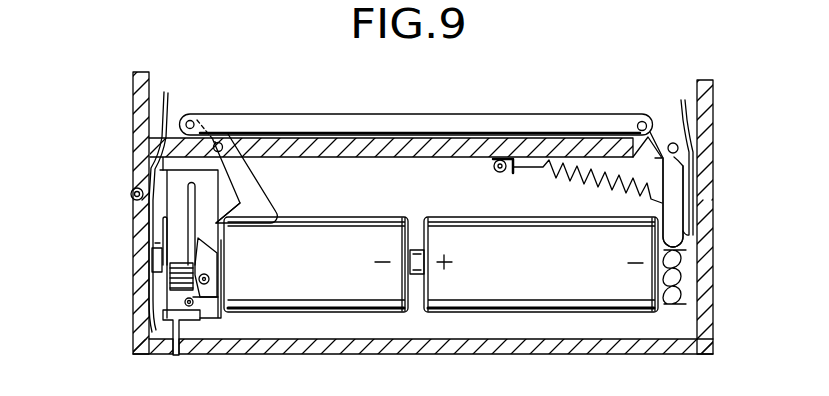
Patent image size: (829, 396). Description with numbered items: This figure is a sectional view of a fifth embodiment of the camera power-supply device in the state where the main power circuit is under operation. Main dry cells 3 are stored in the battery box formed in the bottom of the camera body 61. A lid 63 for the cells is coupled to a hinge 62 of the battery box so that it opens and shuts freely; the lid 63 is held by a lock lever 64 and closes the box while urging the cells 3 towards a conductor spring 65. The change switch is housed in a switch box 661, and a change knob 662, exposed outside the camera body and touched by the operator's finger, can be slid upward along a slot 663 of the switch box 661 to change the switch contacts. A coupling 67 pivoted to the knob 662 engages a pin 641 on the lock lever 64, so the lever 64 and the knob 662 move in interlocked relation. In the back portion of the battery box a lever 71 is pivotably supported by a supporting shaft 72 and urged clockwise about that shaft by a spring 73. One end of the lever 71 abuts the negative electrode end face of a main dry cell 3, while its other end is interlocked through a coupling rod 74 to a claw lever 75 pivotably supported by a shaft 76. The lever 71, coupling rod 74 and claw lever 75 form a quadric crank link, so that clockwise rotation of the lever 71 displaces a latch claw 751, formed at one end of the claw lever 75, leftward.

The camera body 61 is at (140, 104).
The hinge 62 is at (131, 188).
The switch box 661 is at (165, 205).
The slot 663 is at (190, 228).
The lid 63 is at (152, 254).
The change knob 662 is at (180, 294).
The lock lever 64 is at (163, 318).
The pin 641 is at (190, 306).
The shaft 76 is at (223, 144).
The coupling rod 74 is at (436, 118).
The claw lever 75 is at (262, 188).
The latch claw 751 is at (238, 214).
The main dry cells 3 is at (360, 216).
The coupling 67 is at (218, 286).
The spring 73 is at (562, 180).
The supporting shaft 72 is at (686, 141).
The lever 71 is at (678, 178).
The conductor spring 65 is at (683, 305).